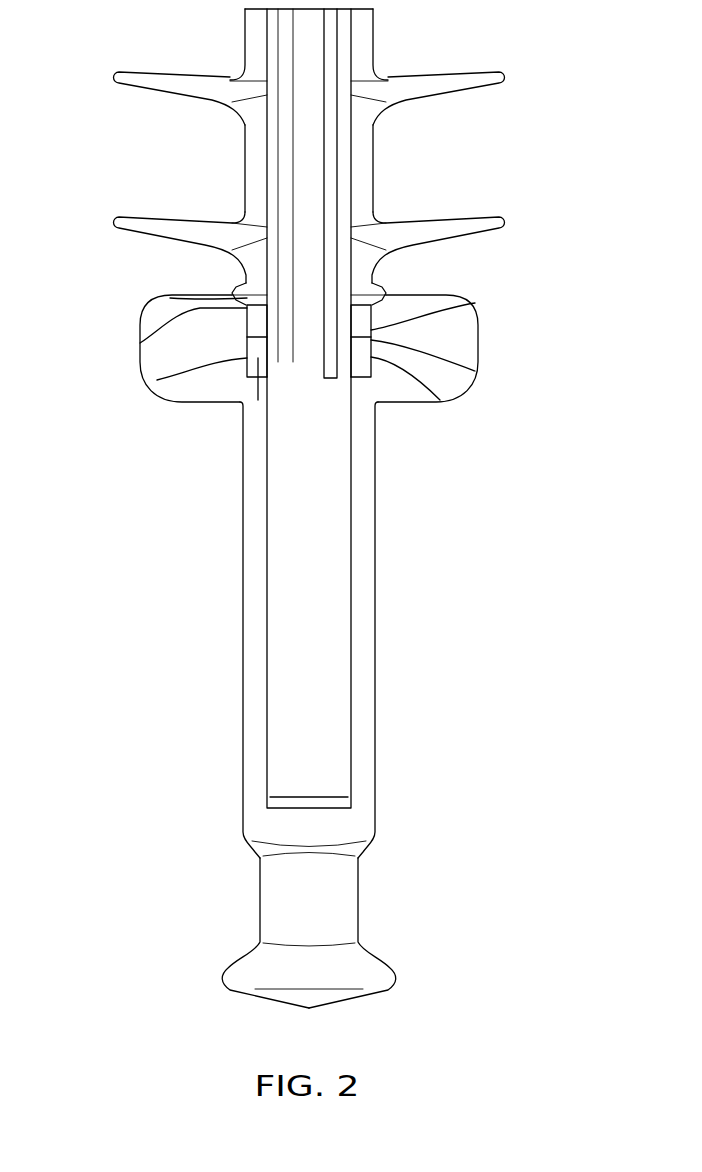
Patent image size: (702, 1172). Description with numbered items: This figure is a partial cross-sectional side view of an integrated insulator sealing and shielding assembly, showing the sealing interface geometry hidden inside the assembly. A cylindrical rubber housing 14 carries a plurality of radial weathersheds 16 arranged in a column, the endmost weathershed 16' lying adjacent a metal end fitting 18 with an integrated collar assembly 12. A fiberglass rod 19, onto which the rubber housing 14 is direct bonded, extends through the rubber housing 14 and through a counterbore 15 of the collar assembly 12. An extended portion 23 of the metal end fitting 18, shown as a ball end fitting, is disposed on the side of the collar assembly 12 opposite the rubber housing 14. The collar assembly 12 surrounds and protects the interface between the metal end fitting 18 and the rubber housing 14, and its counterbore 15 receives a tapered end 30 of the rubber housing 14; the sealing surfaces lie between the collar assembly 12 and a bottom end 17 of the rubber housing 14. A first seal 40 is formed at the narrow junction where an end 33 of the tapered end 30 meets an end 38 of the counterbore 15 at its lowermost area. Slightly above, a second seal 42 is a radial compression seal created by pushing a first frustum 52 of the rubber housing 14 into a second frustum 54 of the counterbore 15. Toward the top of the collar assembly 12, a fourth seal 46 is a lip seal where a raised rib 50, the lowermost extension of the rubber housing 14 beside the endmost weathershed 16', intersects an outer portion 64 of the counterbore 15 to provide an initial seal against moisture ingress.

The collar assembly 12 is at (307, 391).
The rubber housing 14 is at (373, 148).
The counterbore 15 is at (440, 400).
The weathersheds 16 is at (340, 130).
The endmost weathershed 16' is at (340, 236).
The bottom end 17 is at (475, 371).
The metal end fitting 18 is at (377, 668).
The rod 19 is at (285, 687).
The extended portion 23 is at (277, 915).
The tapered end 30 is at (475, 303).
The end of tapered end 33 is at (358, 377).
The end of counterbore 38 is at (364, 377).
The first seal 40 is at (258, 400).
The second seal 42 is at (157, 380).
The fourth seal 46 is at (170, 298).
The raised rib 50 is at (230, 292).
The first frustum 52 is at (247, 378).
The second frustum 54 is at (247, 363).
The outer portion 64 is at (140, 343).